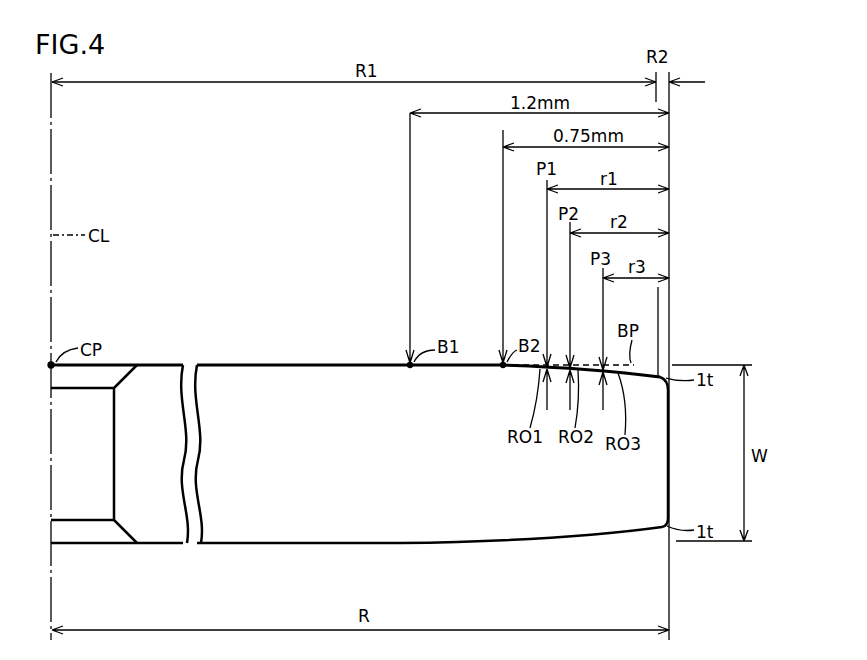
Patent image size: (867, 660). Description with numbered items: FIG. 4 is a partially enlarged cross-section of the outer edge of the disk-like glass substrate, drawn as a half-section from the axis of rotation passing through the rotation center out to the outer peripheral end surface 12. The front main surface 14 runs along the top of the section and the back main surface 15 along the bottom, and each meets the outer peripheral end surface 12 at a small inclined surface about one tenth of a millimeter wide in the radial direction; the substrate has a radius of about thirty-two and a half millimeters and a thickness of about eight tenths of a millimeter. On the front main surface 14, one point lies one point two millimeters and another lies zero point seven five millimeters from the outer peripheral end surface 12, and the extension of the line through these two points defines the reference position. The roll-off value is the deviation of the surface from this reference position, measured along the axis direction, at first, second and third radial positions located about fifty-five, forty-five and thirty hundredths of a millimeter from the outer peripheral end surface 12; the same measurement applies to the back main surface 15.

The outer peripheral end surface 12 is at (668, 452).
The front main surface 14 is at (330, 362).
The back main surface 15 is at (466, 522).